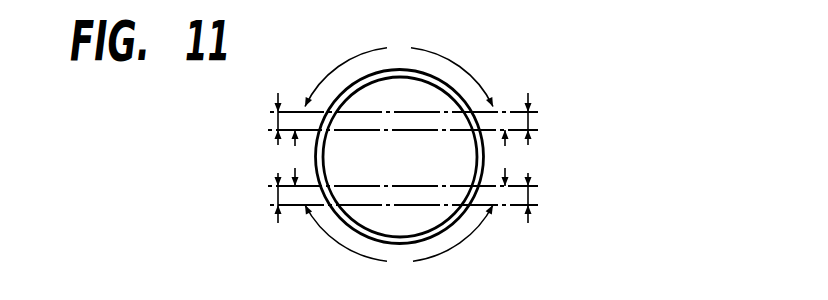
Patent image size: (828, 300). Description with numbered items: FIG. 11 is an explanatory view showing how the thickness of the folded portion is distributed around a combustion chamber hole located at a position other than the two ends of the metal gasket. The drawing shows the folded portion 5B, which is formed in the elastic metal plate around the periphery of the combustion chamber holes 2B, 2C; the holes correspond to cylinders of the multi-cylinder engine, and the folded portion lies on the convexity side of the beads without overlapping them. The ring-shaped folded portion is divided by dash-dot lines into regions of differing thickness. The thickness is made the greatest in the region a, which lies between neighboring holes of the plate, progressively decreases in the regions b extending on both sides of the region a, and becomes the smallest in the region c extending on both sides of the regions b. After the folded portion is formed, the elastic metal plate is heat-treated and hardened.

The folded portion 5B is at (440, 90).
The hole for combustion chamber 2B is at (400, 157).
The hole for combustion chamber 2C is at (440, 172).
The region a is at (400, 158).
The regions b is at (406, 152).
The region c is at (399, 155).